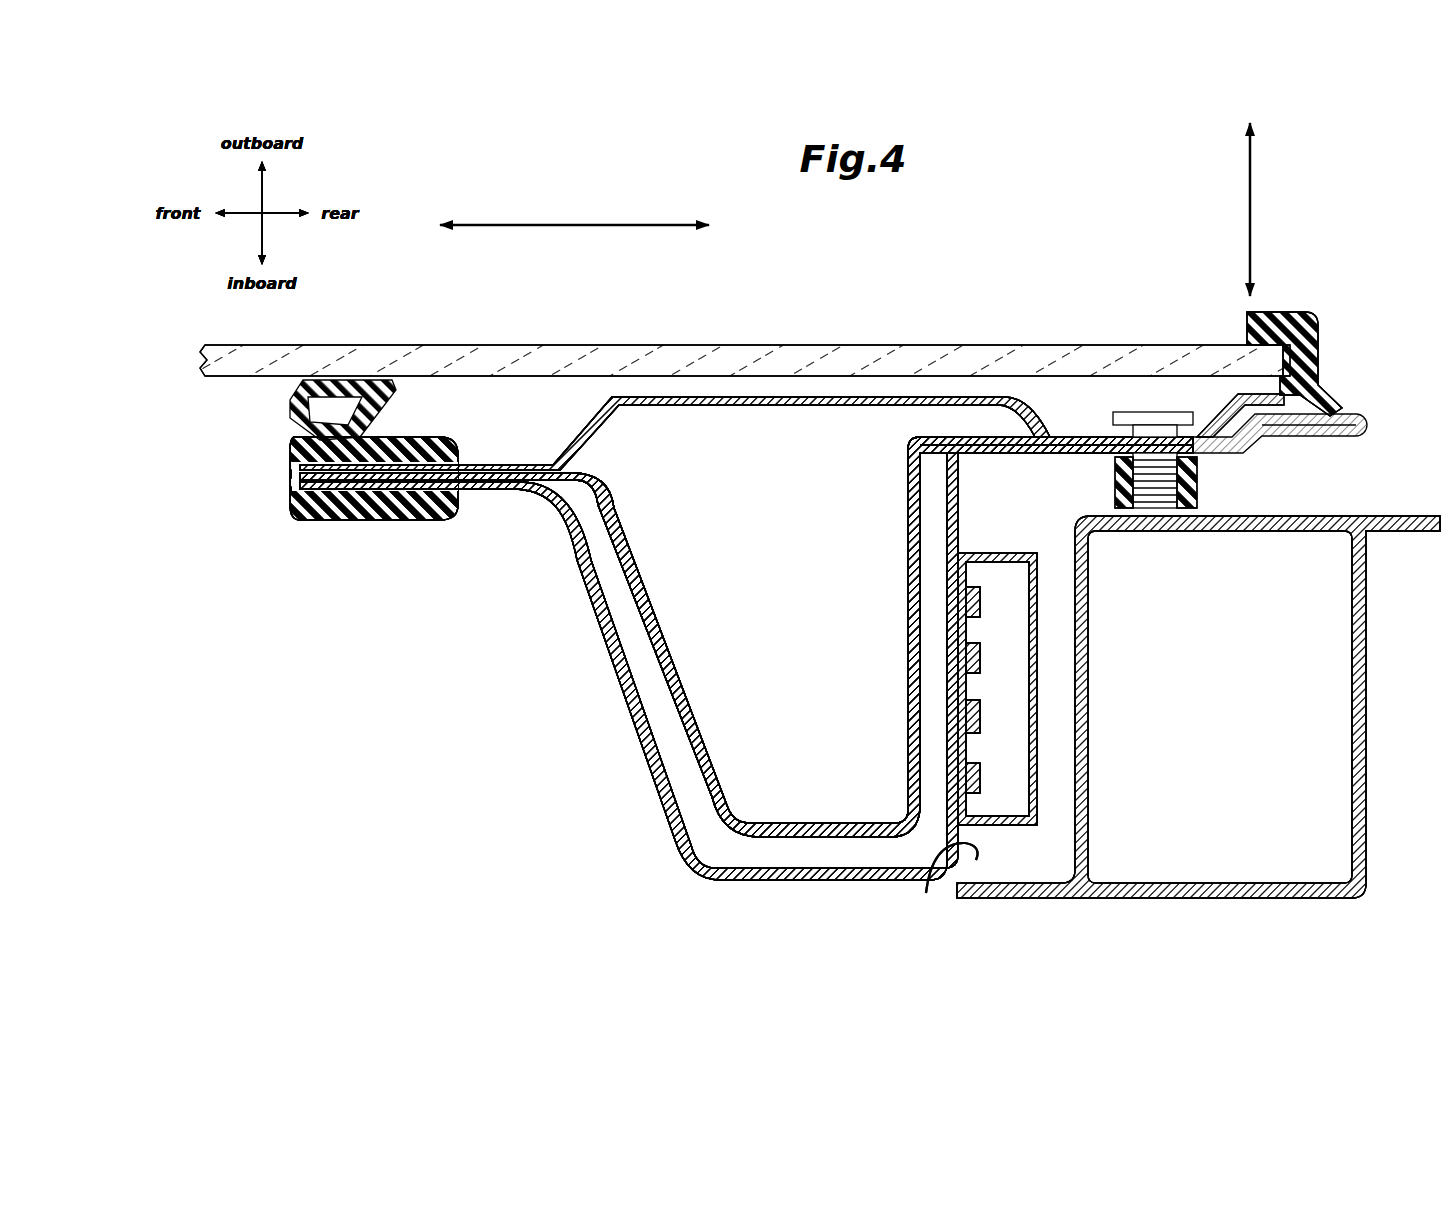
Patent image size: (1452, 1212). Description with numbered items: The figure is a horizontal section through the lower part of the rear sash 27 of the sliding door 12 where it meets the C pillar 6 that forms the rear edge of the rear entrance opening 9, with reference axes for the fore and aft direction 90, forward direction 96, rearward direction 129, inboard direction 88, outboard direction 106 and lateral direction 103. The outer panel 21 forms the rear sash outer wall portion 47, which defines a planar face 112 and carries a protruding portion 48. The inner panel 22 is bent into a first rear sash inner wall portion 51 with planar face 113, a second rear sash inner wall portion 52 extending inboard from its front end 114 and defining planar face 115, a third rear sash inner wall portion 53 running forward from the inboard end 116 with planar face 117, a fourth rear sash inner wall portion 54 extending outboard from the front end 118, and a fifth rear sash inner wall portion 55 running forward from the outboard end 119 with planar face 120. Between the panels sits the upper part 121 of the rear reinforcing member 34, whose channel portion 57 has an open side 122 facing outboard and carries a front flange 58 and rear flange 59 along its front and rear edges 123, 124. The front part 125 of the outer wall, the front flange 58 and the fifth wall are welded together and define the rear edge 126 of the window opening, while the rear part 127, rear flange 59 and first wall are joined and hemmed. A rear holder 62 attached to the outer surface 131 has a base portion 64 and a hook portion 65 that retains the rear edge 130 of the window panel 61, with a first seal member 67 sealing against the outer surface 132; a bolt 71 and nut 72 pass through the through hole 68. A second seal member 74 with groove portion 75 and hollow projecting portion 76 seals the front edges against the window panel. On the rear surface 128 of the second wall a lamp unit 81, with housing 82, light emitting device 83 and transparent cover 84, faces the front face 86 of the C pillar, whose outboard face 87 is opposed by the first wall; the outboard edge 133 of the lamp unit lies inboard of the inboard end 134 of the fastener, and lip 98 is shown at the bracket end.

The C pillar 6 is at (1368, 693).
The rear entrance opening 9 is at (940, 890).
The sliding door 12 is at (703, 905).
The outer panel 21 is at (788, 410).
The inner panel 22 is at (680, 849).
The rear sash 27 is at (802, 884).
The rear reinforcing member 34 is at (660, 623).
The rear sash outer wall portion 47 is at (507, 463).
The protruding portion 48 is at (693, 408).
The first rear sash inner wall portion 51 is at (1032, 455).
The second rear sash inner wall portion 52 is at (963, 540).
The third rear sash inner wall portion 53 is at (870, 882).
The fourth rear sash inner wall portion 54 is at (613, 688).
The fifth rear sash inner wall portion 55 is at (410, 500).
The channel portion 57 is at (679, 710).
The front flange 58 is at (516, 490).
The rear flange 59 is at (965, 420).
The window panel 61 is at (694, 345).
The rear holder 62 is at (1218, 392).
The base portion 64 is at (1103, 434).
The hook portion 65 is at (1322, 345).
The first seal member 67 is at (1326, 392).
The through hole 68 is at (1122, 462).
The bolt 71 is at (1152, 412).
The nut 72 is at (1200, 490).
The second seal member 74 is at (289, 484).
The groove portion 75 is at (358, 522).
The projecting portion 76 is at (293, 405).
The lamp unit 81 is at (990, 842).
The housing 82 is at (978, 645).
The light emitting device 83 is at (975, 606).
The transparent cover 84 is at (1027, 740).
The front face 86 is at (1089, 668).
The outboard face 87 is at (1327, 516).
The inboard direction 88 is at (258, 234).
The fore and aft direction 90 is at (512, 225).
The forward direction 96 is at (235, 212).
The lip 98 is at (1369, 428).
The lateral direction 103 is at (1252, 233).
The outboard direction 106 is at (263, 200).
The planar face 112 is at (1066, 436).
The planar face 113 is at (992, 455).
The front end 114 is at (947, 505).
The planar face 115 is at (960, 552).
The inboard end 116 is at (937, 862).
The planar face 117 is at (757, 882).
The front end 118 is at (693, 876).
The outboard end 119 is at (543, 535).
The planar face 120 is at (383, 472).
The upper part 121 is at (628, 594).
The open side 122 is at (795, 805).
The front edge 123 is at (608, 483).
The rear edge 124 is at (912, 437).
The front part 125 is at (455, 462).
The rear edge 126 is at (300, 488).
The rear part 127 is at (1088, 434).
The rear surface 128 is at (975, 877).
The rearward direction 129 is at (273, 217).
The rear edge 130 is at (1167, 345).
The outer surface 131 is at (1263, 392).
The outer surface 132 is at (792, 345).
The outboard edge 133 is at (998, 566).
The inboard end 134 is at (1187, 510).